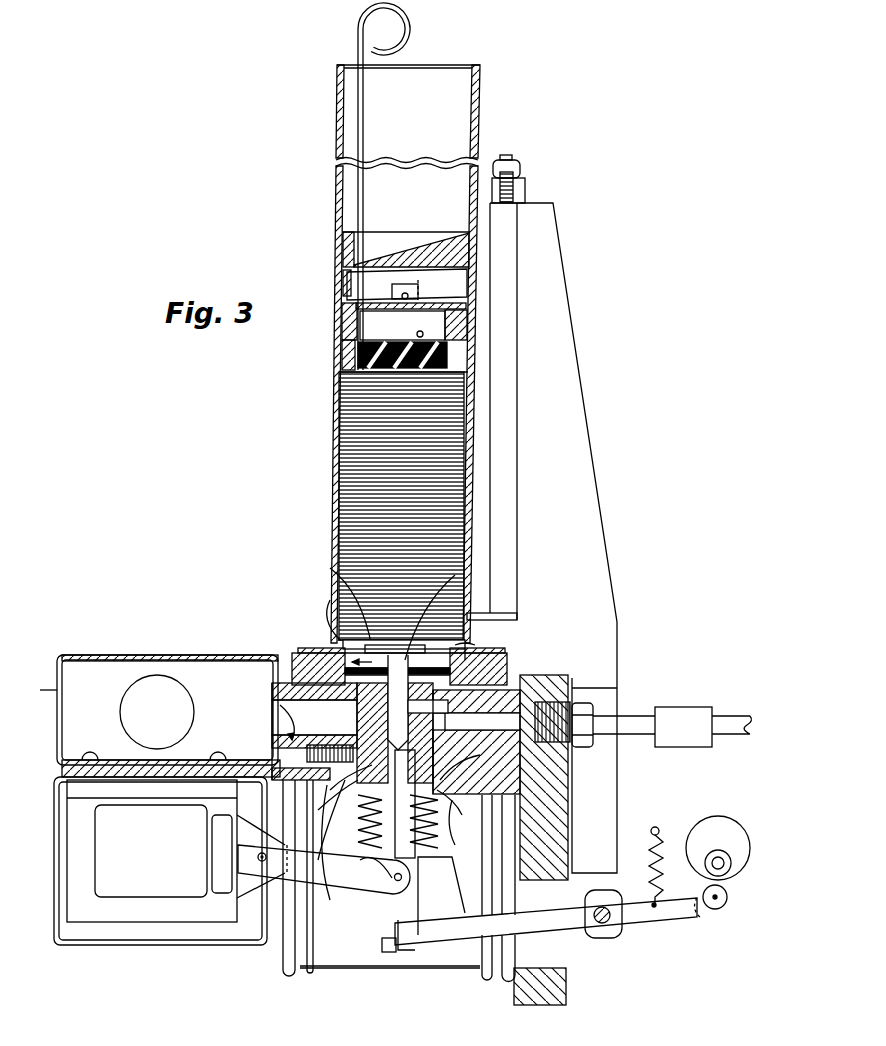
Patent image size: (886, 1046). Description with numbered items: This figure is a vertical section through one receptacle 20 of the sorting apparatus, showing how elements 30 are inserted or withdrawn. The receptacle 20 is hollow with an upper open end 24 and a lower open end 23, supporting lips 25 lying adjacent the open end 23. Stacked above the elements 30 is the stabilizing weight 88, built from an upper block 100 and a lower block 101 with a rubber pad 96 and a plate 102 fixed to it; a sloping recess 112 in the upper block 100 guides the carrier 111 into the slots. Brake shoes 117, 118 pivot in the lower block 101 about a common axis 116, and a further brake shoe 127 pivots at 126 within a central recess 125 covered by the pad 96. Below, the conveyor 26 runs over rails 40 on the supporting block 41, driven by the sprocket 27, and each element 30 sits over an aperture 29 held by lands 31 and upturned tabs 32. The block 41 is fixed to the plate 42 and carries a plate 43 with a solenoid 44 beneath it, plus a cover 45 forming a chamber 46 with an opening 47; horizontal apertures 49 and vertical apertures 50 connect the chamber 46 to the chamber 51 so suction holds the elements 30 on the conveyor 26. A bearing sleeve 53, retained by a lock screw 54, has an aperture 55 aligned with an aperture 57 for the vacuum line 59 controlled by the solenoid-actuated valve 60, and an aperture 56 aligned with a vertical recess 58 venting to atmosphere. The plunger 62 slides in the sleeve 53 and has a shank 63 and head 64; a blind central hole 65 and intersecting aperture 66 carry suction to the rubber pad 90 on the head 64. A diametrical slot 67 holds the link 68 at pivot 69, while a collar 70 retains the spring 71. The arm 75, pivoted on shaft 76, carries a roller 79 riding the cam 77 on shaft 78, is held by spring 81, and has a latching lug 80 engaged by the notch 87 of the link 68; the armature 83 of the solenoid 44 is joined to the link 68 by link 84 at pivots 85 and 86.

The receptacle 20 is at (332, 453).
The open end 24 is at (452, 56).
The carrier 111 is at (357, 131).
The sloping recess 112 is at (370, 245).
The stabilizing weight 88 is at (341, 256).
The upper block 100 is at (455, 258).
The brake shoe 117 is at (455, 283).
The brake shoe 118 is at (370, 284).
The common axis 116 is at (405, 290).
The pivot 126 is at (430, 322).
The brake shoe 127 is at (385, 320).
The lower block 101 is at (470, 332).
The central recess 125 is at (440, 335).
The rubber pad 96 is at (450, 360).
The plate 102 is at (356, 364).
The element 30 is at (350, 421).
The upturned tab 32 is at (330, 568).
The supporting lip 25 is at (330, 596).
The plunger 62 is at (360, 690).
The conveyor 26 is at (312, 650).
The rail 40 is at (300, 648).
The blind central hole 65 is at (445, 660).
The rubber pad 90 is at (420, 660).
The open end 23 is at (465, 652).
The aperture 29 is at (462, 646).
The land 31 is at (505, 657).
The chamber 51 is at (545, 692).
The supporting block 41 is at (500, 773).
The plate 42 is at (540, 810).
The aperture 57 is at (645, 696).
The vacuum line 59 is at (652, 704).
The solenoid-actuated valve 60 is at (699, 705).
The head 64 is at (290, 690).
The vertical aperture 50 is at (290, 713).
The horizontal aperture 49 is at (290, 743).
The lock screw 54 is at (300, 772).
The chamber 46 is at (83, 648).
The opening 47 is at (127, 681).
The cover 45 is at (42, 686).
The plate 43 is at (79, 761).
The solenoid 44 is at (95, 903).
The pivot 85 is at (255, 853).
The armature 83 is at (255, 871).
The pivot 86 is at (396, 875).
The sprocket 27 is at (290, 962).
The arm 75 is at (465, 956).
The intersecting aperture 66 is at (398, 806).
The pivot 69 is at (358, 828).
The vertical recess 58 is at (448, 838).
The bearing sleeve 53 is at (330, 789).
The shank 63 is at (330, 801).
The aperture 55 is at (445, 781).
The aperture 56 is at (440, 814).
The collar 70 is at (418, 866).
The link 68 is at (412, 907).
The diametrical slot 67 is at (380, 874).
The spring 71 is at (348, 894).
The link 84 is at (328, 916).
The notch 87 is at (373, 936).
The latching lug 80 is at (393, 952).
The shaft 76 is at (610, 926).
The roller 79 is at (727, 889).
The cam 77 is at (723, 820).
The shaft 78 is at (729, 859).
The spring 81 is at (650, 864).